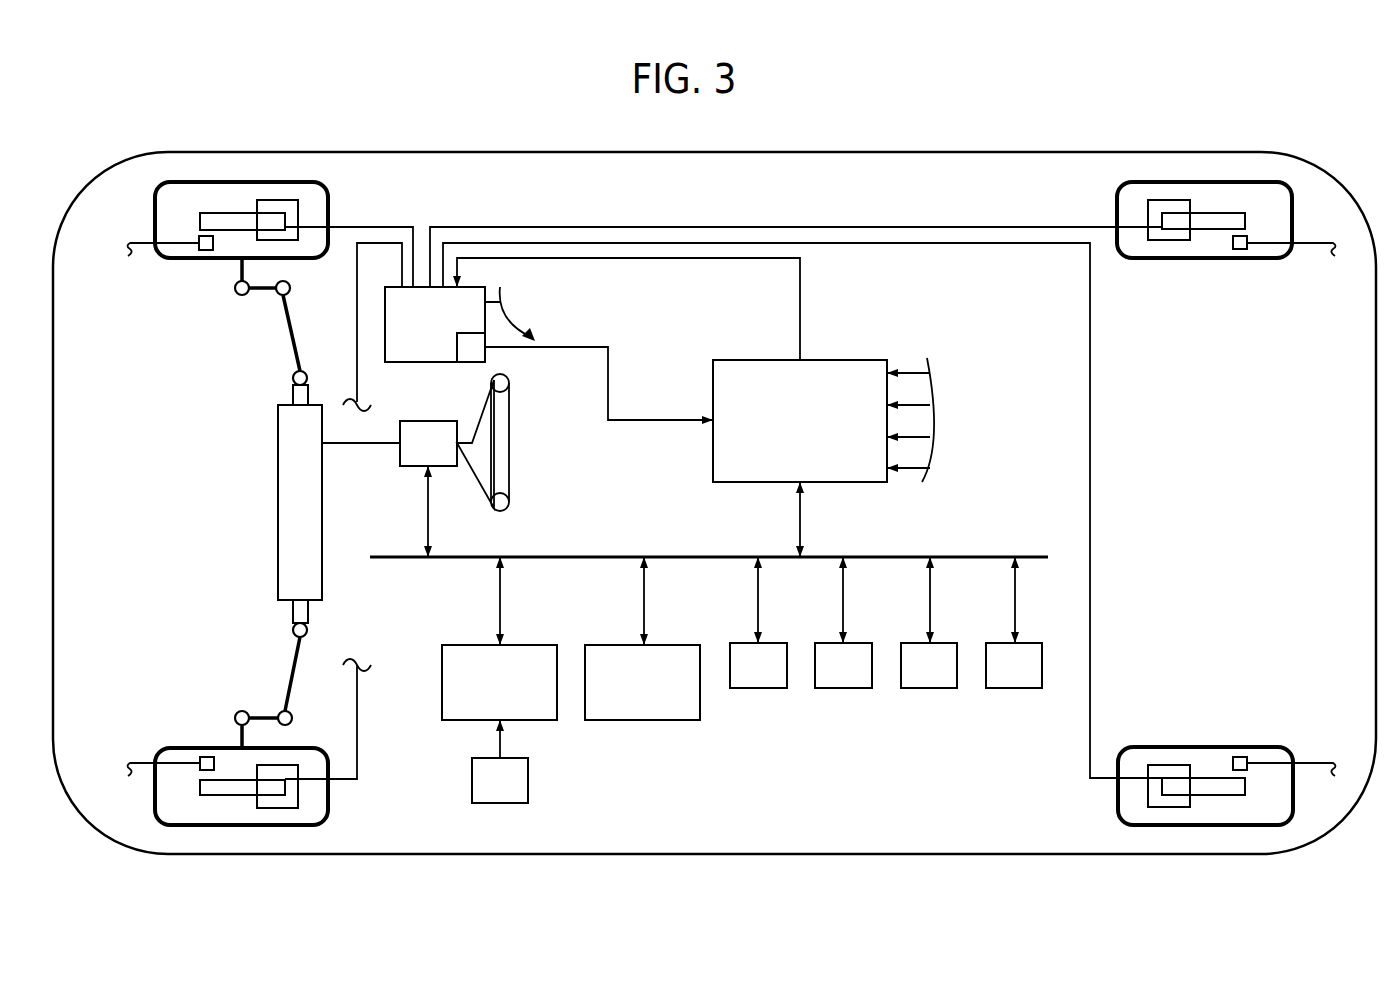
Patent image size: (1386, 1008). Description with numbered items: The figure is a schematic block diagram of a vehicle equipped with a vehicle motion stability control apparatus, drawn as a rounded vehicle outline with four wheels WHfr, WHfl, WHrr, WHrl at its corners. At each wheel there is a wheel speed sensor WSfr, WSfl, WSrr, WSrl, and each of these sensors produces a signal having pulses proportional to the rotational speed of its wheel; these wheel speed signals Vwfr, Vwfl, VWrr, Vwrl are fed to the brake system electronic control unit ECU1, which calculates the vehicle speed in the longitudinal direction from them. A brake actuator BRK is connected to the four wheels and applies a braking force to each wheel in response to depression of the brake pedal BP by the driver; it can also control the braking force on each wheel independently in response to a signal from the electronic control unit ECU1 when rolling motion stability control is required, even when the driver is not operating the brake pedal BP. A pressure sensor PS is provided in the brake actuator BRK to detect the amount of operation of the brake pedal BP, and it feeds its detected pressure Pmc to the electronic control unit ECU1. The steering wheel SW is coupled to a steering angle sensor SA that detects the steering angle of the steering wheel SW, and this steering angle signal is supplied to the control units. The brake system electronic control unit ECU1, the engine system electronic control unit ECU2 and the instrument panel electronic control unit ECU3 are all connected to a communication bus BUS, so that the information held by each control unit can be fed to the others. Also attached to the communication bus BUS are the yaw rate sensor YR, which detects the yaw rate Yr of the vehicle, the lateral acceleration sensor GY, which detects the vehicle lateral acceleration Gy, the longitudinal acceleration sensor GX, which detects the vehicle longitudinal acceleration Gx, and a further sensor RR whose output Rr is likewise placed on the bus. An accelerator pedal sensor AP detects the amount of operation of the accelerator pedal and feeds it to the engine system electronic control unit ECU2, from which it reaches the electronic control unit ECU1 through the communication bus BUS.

The front right wheel WHfr is at (241, 207).
The front left wheel WHfl is at (241, 800).
The rear right wheel WHrr is at (1204, 207).
The rear left wheel WHrl is at (1205, 798).
The front right wheel speed sensor WSfr is at (212, 252).
The front left wheel speed sensor WSfl is at (215, 730).
The rear right wheel speed sensor WSrr is at (1238, 250).
The rear left wheel speed sensor WSrl is at (1238, 757).
The brake actuator BRK is at (435, 324).
The pressure sensor PS is at (471, 355).
The brake pedal BP is at (507, 320).
The detected pressure Pmc is at (599, 385).
The steering angle sensor SA is at (428, 443).
The steering wheel SW is at (513, 463).
The brake system electronic control unit ECU1 is at (800, 421).
The engine system electronic control unit ECU2 is at (499, 638).
The instrument panel electronic control unit ECU3 is at (642, 638).
The accelerator pedal sensor AP is at (500, 761).
The communication bus BUS is at (720, 541).
The yaw rate sensor YR is at (758, 622).
The lateral acceleration sensor GY is at (843, 622).
The longitudinal acceleration sensor GX is at (929, 622).
The roll rate sensor RR is at (1014, 622).
The yaw rate Yr is at (778, 603).
The vehicle lateral acceleration Gy is at (868, 603).
The vehicle longitudinal acceleration Gx is at (953, 603).
The roll rate signal Rr is at (1036, 603).
The front right wheel speed signal Vwfr is at (974, 370).
The front left wheel speed signal Vwfl is at (972, 402).
The rear right wheel speed signal VWrr is at (976, 439).
The rear left wheel speed signal Vwrl is at (973, 475).